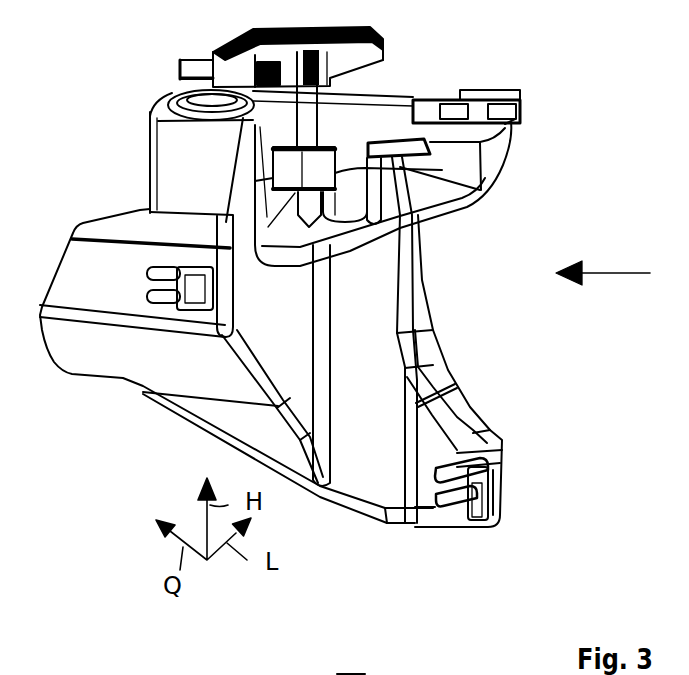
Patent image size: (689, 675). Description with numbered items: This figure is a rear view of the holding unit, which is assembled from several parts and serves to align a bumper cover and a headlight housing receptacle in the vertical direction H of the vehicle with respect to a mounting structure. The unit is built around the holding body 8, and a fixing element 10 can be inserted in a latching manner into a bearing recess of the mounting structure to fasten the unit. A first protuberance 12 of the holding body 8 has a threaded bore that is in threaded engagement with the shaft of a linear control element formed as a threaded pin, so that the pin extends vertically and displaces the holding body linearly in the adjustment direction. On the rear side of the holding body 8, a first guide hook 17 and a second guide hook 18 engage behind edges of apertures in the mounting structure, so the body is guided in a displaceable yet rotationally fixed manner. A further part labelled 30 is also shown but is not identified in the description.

The holding body 8 is at (618, 278).
The fixing element 10 is at (383, 48).
The first protuberance 12 is at (497, 197).
The first guide hook 17 is at (165, 313).
The second guide hook 18 is at (497, 508).
The component of adjacent figure 30 is at (316, 661).